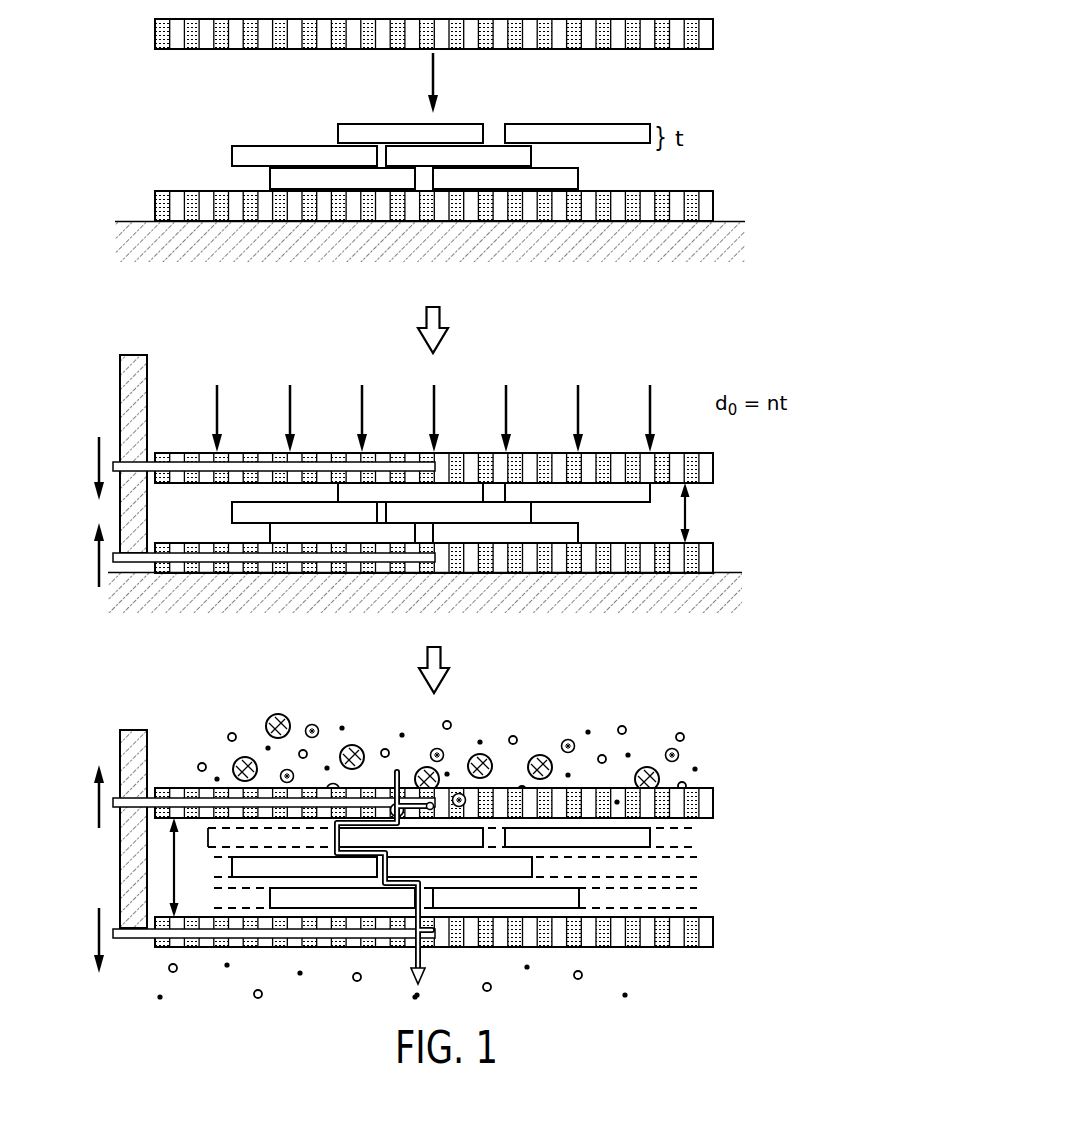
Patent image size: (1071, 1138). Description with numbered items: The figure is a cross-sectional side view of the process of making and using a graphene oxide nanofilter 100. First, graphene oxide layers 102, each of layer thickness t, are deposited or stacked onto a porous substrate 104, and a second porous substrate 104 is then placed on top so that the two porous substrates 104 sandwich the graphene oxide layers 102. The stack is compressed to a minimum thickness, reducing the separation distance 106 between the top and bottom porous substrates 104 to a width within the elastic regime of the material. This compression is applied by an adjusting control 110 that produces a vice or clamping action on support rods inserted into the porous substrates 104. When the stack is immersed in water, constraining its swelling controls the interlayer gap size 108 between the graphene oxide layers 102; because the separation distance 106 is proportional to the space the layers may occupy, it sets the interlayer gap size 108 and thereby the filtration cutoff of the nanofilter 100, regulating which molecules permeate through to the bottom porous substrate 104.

The nanofilter 100 is at (459, 821).
The graphene oxide layers 102 is at (232, 155).
The porous substrate 104 is at (715, 30).
The separation distance 106 is at (733, 513).
The interlayer gap size 108 is at (690, 856).
The adjusting control 110 is at (133, 388).